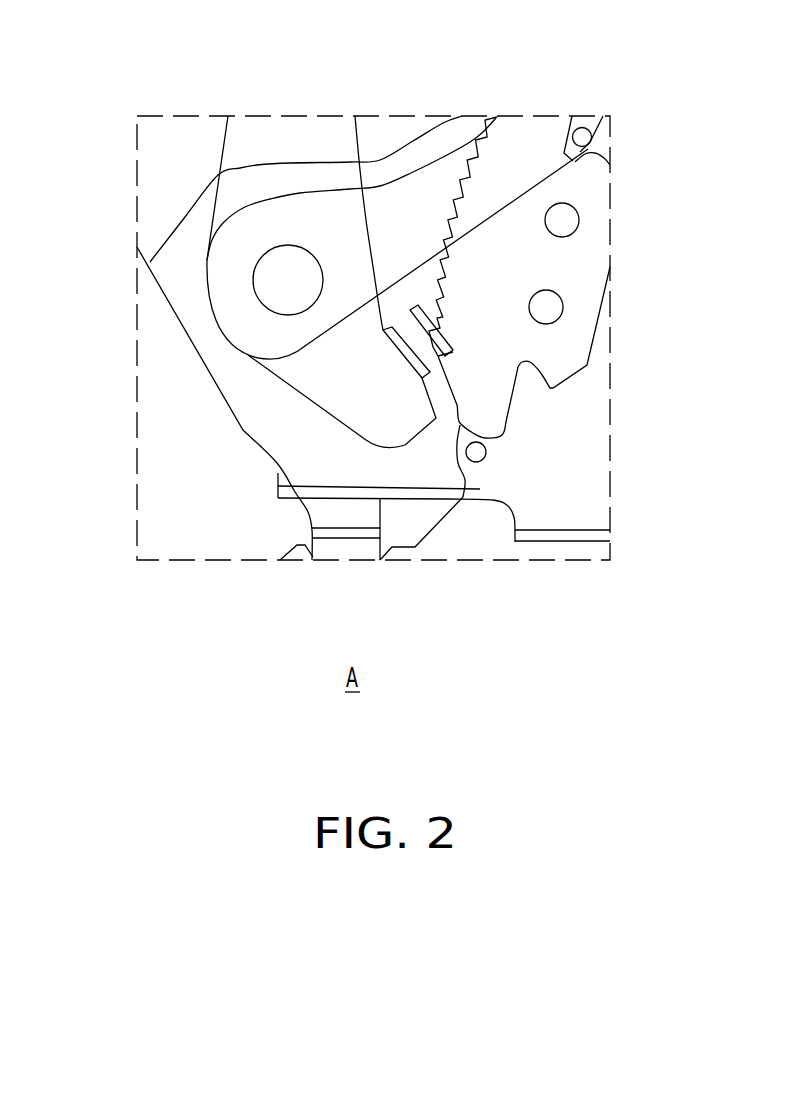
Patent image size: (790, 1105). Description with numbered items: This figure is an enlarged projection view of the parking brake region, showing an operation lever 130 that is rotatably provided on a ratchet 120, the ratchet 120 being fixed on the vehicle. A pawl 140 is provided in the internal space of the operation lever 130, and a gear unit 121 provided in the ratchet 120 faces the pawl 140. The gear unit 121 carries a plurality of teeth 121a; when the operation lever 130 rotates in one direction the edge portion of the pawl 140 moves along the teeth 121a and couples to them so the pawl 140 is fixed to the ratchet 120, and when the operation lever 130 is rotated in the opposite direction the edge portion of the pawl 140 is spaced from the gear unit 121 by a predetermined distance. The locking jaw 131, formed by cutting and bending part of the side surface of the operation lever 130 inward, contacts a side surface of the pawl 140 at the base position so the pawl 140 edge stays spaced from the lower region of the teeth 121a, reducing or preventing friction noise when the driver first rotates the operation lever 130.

The ratchet 120 is at (582, 444).
The gear unit 121 is at (544, 244).
The teeth 121a is at (477, 168).
The operation lever 130 is at (180, 279).
The locking jaw 131 is at (412, 330).
The pawl 140 is at (243, 138).